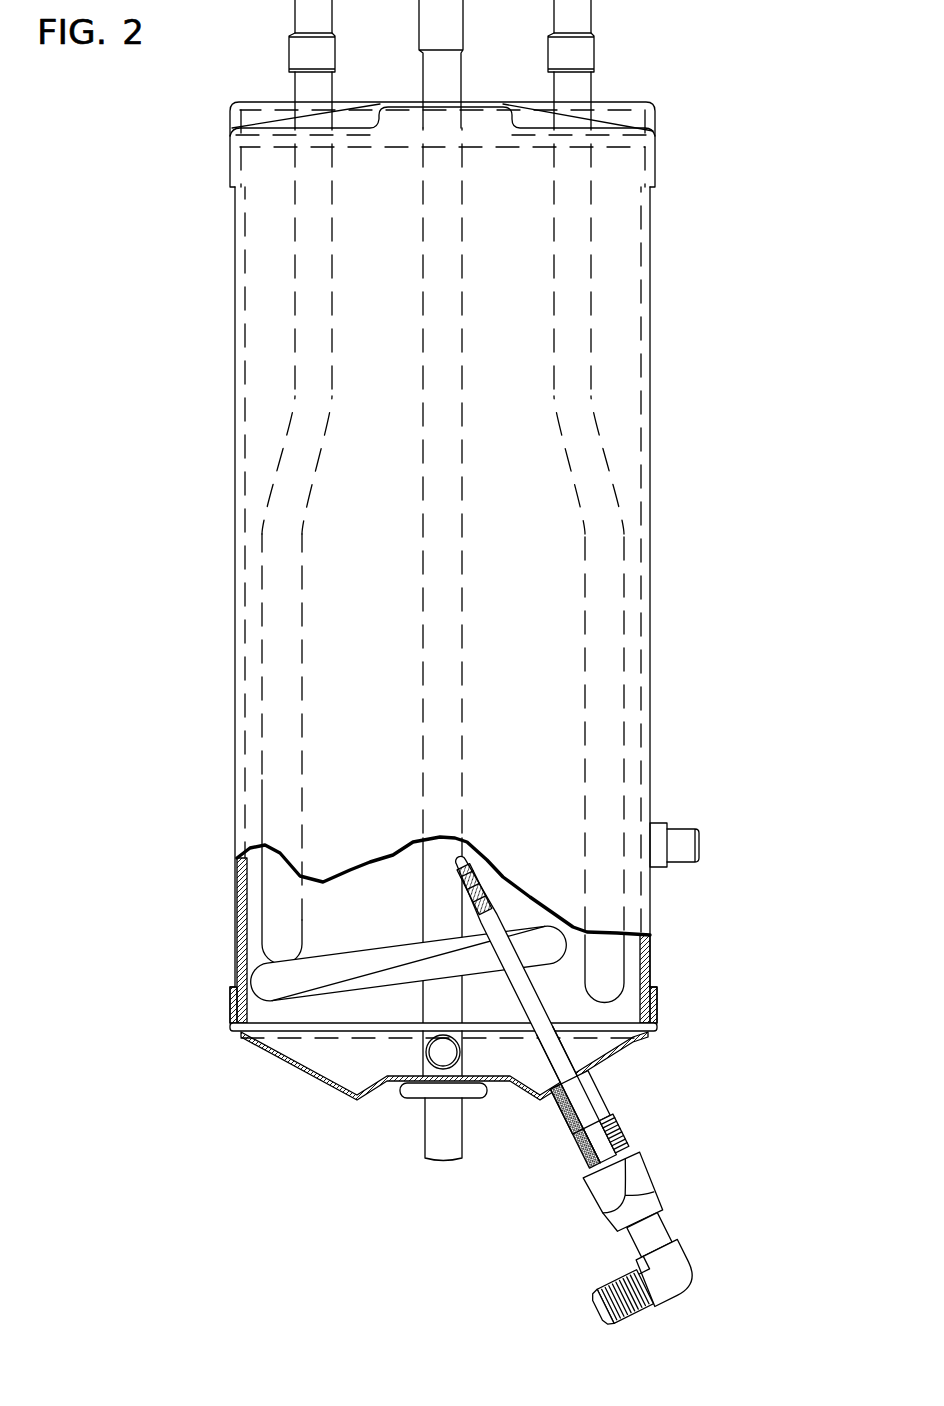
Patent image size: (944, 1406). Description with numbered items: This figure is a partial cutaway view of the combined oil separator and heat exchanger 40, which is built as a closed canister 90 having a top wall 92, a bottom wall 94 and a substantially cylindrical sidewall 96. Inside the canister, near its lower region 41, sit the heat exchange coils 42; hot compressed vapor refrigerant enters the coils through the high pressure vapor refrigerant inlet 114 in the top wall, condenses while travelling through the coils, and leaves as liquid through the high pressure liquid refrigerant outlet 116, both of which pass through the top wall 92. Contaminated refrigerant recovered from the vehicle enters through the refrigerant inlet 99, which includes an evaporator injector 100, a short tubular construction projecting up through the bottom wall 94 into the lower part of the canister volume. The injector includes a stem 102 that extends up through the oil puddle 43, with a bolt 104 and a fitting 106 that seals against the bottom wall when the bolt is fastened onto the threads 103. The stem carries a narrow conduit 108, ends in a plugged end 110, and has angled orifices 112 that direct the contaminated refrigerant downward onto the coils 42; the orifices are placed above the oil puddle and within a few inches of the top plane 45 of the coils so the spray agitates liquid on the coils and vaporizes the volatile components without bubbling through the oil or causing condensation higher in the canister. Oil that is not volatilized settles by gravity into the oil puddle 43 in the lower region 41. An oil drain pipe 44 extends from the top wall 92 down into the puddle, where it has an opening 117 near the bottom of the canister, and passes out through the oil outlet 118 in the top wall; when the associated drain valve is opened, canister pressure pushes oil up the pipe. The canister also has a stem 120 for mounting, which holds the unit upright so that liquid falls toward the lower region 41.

The combined oil separator and heat exchanger 40 is at (170, 447).
The lower region 41 is at (242, 963).
The heat exchange coils 42 is at (325, 943).
The oil puddle 43 is at (347, 1073).
The oil drain pipe 44 is at (445, 410).
The top plane of the coils 45 is at (333, 925).
The closed canister 90 is at (651, 405).
The top wall 92 is at (653, 131).
The bottom wall 94 is at (270, 1057).
The sidewall 96 is at (650, 645).
The refrigerant inlet 99 is at (562, 1087).
The evaporator injector 100 is at (597, 1090).
The stem 102 is at (558, 1058).
The threads 103 is at (620, 1123).
The bolt 104 is at (643, 1177).
The fitting 106 is at (680, 1260).
The narrow conduit 108 is at (470, 888).
The plugged end 110 is at (457, 847).
The angled orifices 112 is at (475, 912).
The high pressure vapor refrigerant inlet 114 is at (588, 58).
The high pressure liquid refrigerant outlet 116 is at (320, 54).
The opening 117 is at (444, 1053).
The oil outlet 118 is at (455, 67).
The stem for mounting 120 is at (447, 1143).